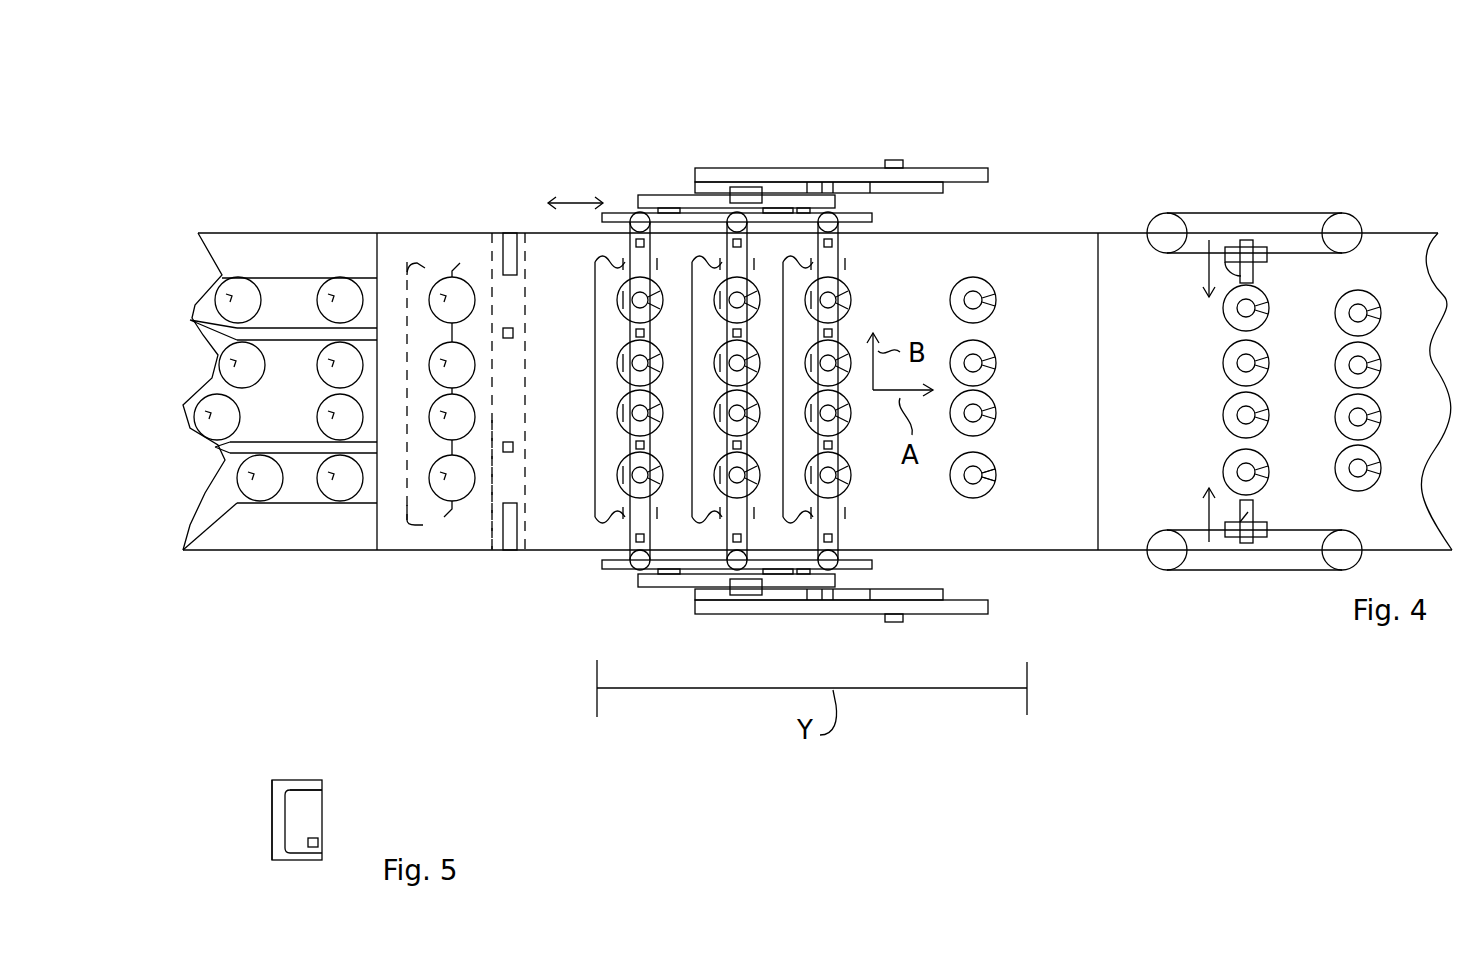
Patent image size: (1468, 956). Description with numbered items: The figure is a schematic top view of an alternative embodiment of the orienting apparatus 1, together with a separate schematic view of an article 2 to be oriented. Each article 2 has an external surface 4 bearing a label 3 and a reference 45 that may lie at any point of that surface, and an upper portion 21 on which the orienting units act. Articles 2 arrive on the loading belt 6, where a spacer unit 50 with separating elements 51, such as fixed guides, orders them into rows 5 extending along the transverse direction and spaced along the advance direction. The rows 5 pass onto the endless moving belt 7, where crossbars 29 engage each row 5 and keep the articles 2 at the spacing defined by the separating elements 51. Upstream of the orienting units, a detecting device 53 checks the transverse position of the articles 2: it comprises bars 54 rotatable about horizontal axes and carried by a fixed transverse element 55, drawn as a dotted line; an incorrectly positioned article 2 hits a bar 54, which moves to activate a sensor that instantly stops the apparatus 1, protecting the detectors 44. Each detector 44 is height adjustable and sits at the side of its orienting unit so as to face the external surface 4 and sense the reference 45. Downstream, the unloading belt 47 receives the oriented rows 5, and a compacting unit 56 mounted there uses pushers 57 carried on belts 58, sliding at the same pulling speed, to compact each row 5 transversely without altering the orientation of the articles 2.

In FIG. 4, the orienting apparatus 1 is at (852, 125).
In FIG. 5, the article 2 is at (232, 808).
In FIG. 5, the label 3 is at (303, 810).
In FIG. 5, the external surface 4 is at (270, 790).
In FIG. 4, the row 5 is at (337, 523).
In FIG. 4, the loading belt 6 is at (250, 527).
In FIG. 4, the moving belt 7 is at (467, 538).
In FIG. 4, the upper portion 21 is at (973, 283).
In FIG. 5, the upper portion 21 is at (297, 780).
In FIG. 4, the crossbar 29 is at (410, 268).
In FIG. 4, the detector 44 is at (630, 332).
In FIG. 4, the reference 45 is at (993, 477).
In FIG. 5, the reference 45 is at (320, 840).
In FIG. 4, the unloading belt 47 is at (1127, 523).
In FIG. 4, the spacer unit 50 is at (280, 257).
In FIG. 4, the separating element 51 is at (190, 320).
In FIG. 4, the detecting device 53 is at (488, 572).
In FIG. 4, the bar 54 is at (490, 252).
In FIG. 4, the fixed transverse element 55 is at (500, 483).
In FIG. 4, the compacting unit 56 is at (1262, 187).
In FIG. 4, the pusher 57 is at (1218, 247).
In FIG. 4, the belt 58 is at (1300, 215).